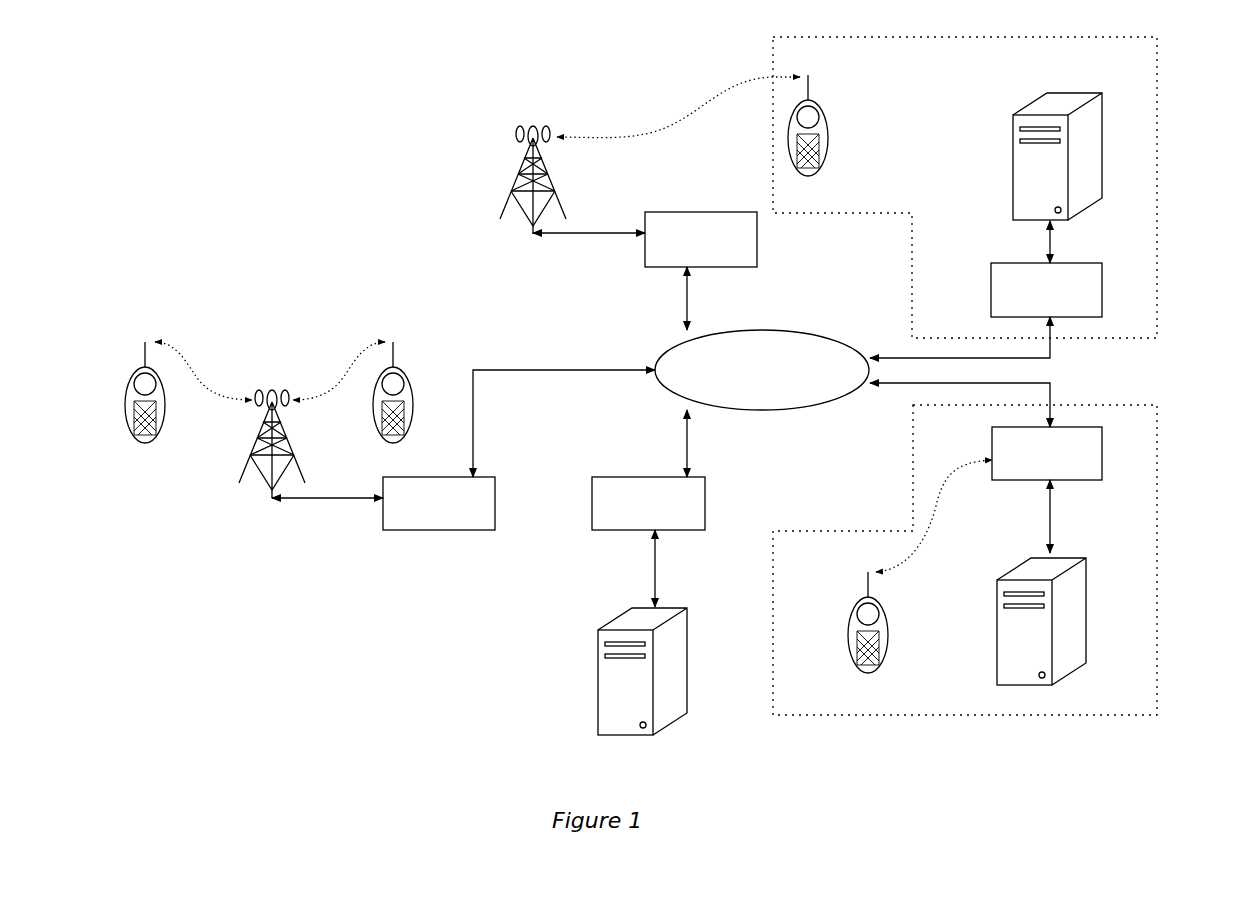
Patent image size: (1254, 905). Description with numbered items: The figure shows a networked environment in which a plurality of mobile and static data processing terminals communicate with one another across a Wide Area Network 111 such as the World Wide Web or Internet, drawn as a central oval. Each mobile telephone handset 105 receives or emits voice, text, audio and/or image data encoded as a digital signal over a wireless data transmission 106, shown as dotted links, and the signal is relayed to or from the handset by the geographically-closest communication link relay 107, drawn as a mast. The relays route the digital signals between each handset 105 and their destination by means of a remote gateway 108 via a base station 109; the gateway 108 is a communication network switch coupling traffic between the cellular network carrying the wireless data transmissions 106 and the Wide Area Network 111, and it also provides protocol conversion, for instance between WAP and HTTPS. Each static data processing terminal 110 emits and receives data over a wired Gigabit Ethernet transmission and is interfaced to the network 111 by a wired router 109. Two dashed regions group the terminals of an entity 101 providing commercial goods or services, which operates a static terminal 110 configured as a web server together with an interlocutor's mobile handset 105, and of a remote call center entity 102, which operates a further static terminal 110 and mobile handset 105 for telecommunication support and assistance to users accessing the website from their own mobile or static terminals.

The entity 101 is at (1125, 170).
The remote call center entity 102 is at (1125, 629).
The mobile telephone handset 105 is at (477, 368).
The wireless data transmission 106 is at (650, 133).
The communication link relay 107 is at (240, 480).
The remote gateway 108 is at (645, 265).
The wired router 109 is at (685, 517).
The data processing terminal 110 is at (802, 414).
The Wide Area Network 111 is at (857, 348).